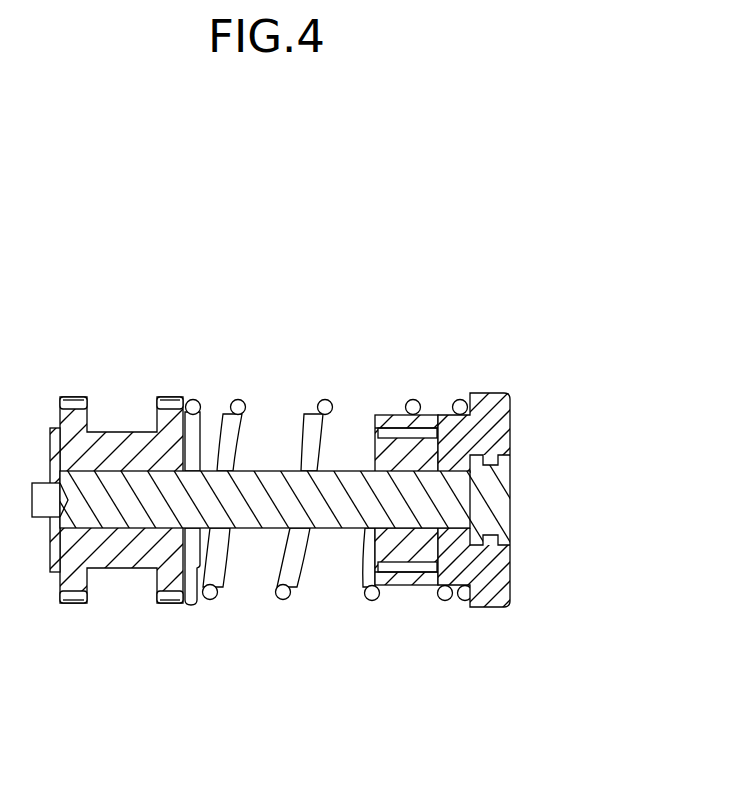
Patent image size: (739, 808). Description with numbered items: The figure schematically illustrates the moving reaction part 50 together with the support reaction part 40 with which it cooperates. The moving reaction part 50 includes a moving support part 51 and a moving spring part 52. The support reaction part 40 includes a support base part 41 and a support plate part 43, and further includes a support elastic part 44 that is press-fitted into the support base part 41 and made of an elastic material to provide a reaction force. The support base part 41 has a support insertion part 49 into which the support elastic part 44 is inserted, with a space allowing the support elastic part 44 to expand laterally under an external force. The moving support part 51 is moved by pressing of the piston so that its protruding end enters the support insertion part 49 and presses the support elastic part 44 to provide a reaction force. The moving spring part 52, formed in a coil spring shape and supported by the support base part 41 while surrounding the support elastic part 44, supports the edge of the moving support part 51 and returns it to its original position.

The support reaction part 40 is at (503, 228).
The support base part 41 is at (488, 597).
The support plate part 43 is at (53, 570).
The support elastic part 44 is at (405, 545).
The support insertion part 49 is at (388, 416).
The moving reaction part 50 is at (330, 560).
The moving support part 51 is at (300, 678).
The moving spring part 52 is at (283, 598).